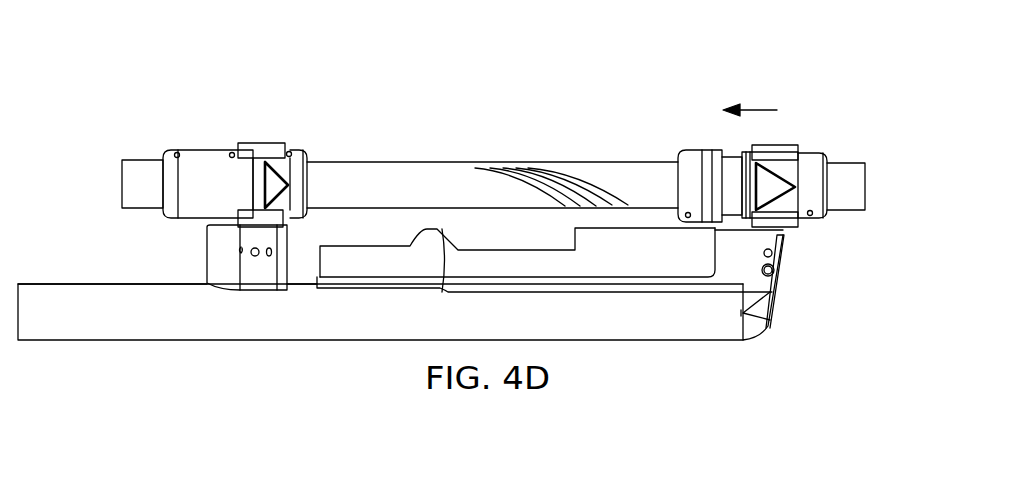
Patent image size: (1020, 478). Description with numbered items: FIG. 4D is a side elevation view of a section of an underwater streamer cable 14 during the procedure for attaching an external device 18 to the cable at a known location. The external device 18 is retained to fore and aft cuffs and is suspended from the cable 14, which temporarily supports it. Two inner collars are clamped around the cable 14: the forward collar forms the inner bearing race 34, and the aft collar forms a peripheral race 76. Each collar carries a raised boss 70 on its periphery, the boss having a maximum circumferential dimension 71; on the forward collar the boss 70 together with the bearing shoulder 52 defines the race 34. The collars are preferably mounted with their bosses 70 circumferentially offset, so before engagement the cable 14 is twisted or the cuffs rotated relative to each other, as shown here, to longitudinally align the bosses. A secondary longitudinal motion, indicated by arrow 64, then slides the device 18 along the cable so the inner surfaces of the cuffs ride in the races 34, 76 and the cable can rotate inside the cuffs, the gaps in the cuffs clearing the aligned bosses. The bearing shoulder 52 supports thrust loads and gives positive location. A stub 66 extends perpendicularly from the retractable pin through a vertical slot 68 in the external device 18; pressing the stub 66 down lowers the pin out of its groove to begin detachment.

The cable 14 is at (398, 172).
The external device 18 is at (755, 330).
The inner bearing race 34 is at (714, 157).
The bearing shoulder 52 is at (710, 157).
The arrow 64 is at (777, 110).
The stub 66 is at (787, 233).
The vertical slot 68 is at (785, 240).
The raised boss 70 is at (277, 180).
The maximum circumferential dimension 71 is at (250, 187).
The peripheral race 76 is at (193, 203).